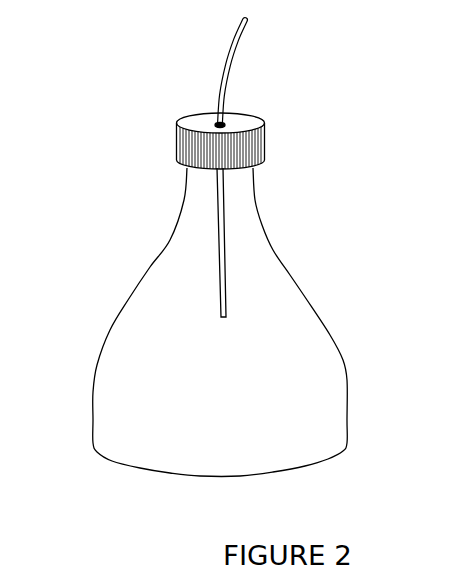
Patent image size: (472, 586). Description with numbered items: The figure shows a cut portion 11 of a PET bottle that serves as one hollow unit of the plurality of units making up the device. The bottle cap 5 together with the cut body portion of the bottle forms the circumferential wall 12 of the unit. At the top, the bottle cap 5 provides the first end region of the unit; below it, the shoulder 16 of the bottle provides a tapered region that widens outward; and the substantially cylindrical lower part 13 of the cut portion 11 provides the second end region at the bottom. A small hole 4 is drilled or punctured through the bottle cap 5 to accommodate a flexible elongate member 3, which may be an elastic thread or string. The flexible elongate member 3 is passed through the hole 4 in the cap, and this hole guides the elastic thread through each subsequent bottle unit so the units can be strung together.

The flexible elongate member 3 is at (242, 58).
The hole 4 is at (229, 125).
The bottle cap 5 is at (176, 142).
The cut portion 11 is at (304, 208).
The circumferential wall 12 is at (139, 268).
The substantially cylindrical lower part 13 is at (91, 392).
The shoulder 16 is at (279, 250).